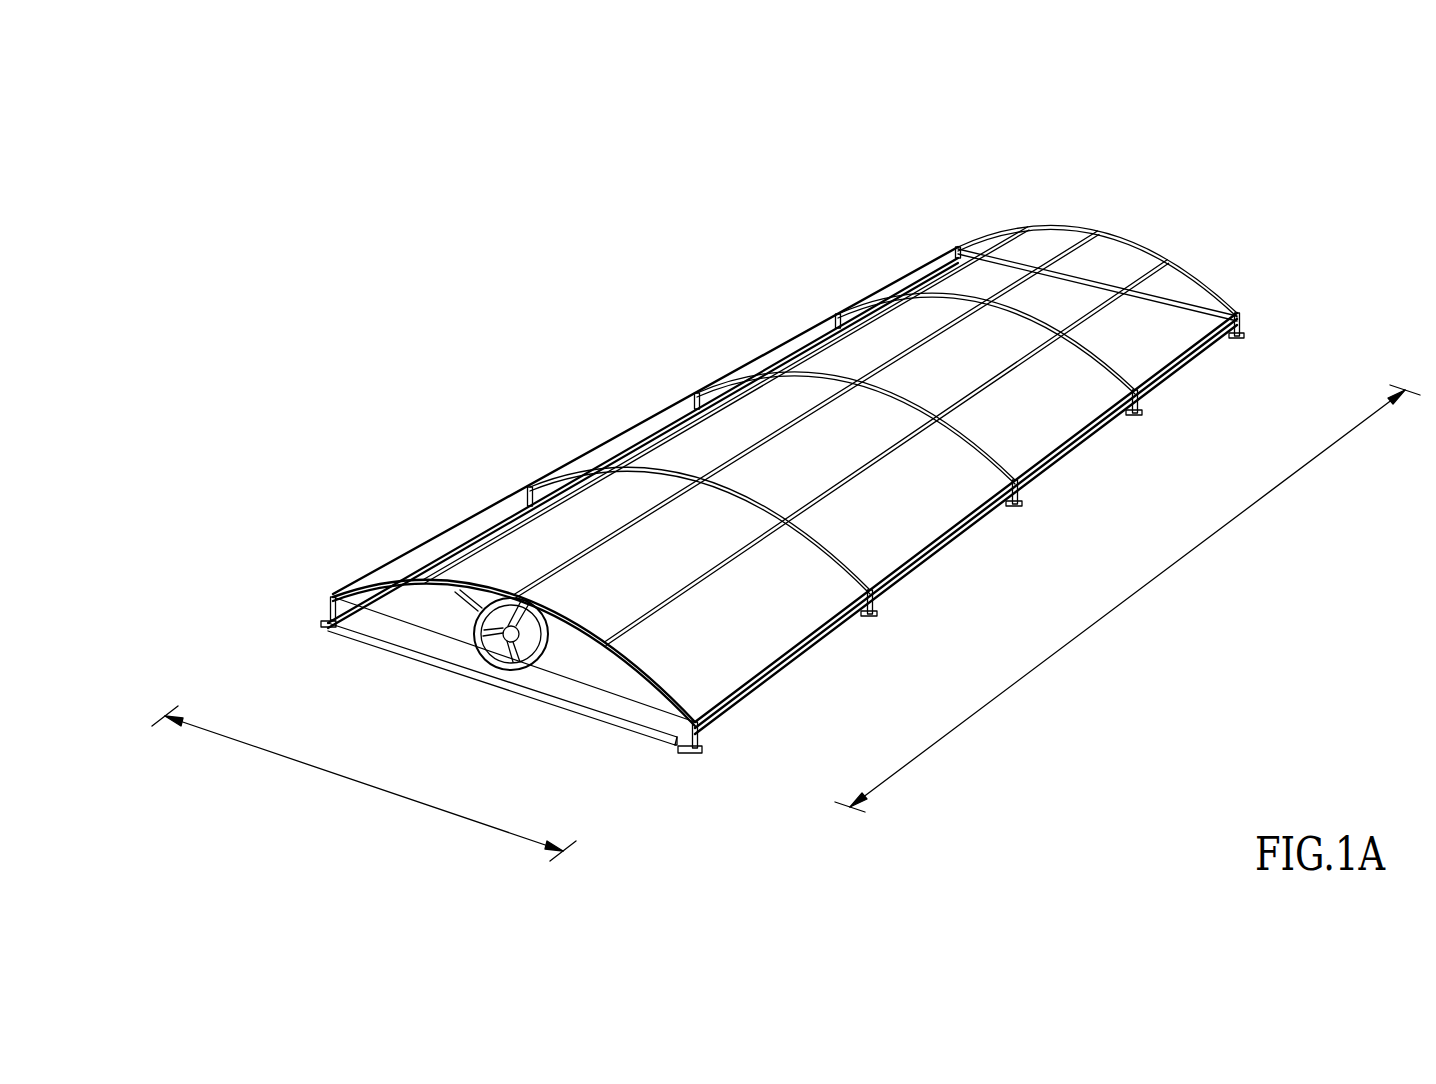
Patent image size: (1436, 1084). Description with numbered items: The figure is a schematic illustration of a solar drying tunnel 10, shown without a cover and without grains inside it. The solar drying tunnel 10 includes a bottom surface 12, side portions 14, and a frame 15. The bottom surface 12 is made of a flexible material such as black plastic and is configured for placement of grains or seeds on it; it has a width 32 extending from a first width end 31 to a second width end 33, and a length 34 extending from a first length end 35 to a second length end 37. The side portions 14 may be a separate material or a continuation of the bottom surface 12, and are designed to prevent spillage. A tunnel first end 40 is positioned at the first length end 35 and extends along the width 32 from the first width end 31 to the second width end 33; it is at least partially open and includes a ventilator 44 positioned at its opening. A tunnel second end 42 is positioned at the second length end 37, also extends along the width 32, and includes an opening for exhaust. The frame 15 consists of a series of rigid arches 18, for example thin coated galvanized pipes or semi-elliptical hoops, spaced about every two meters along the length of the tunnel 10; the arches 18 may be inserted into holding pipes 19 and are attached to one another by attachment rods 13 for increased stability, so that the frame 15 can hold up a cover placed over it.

The solar drying tunnel 10 is at (668, 218).
The bottom surface 12 is at (585, 673).
The attachment rods 13 is at (922, 346).
The side portions 14 is at (485, 528).
The frame 15 is at (1212, 235).
The arches 18 is at (757, 497).
The holding pipes 19 is at (1023, 498).
The first width end 31 is at (320, 622).
The width 32 is at (364, 783).
The second width end 33 is at (655, 737).
The length 34 is at (1127, 598).
The first length end 35 is at (680, 752).
The second length end 37 is at (1240, 318).
The tunnel first end 40 is at (394, 657).
The tunnel second end 42 is at (1033, 248).
The ventilator 44 is at (497, 653).